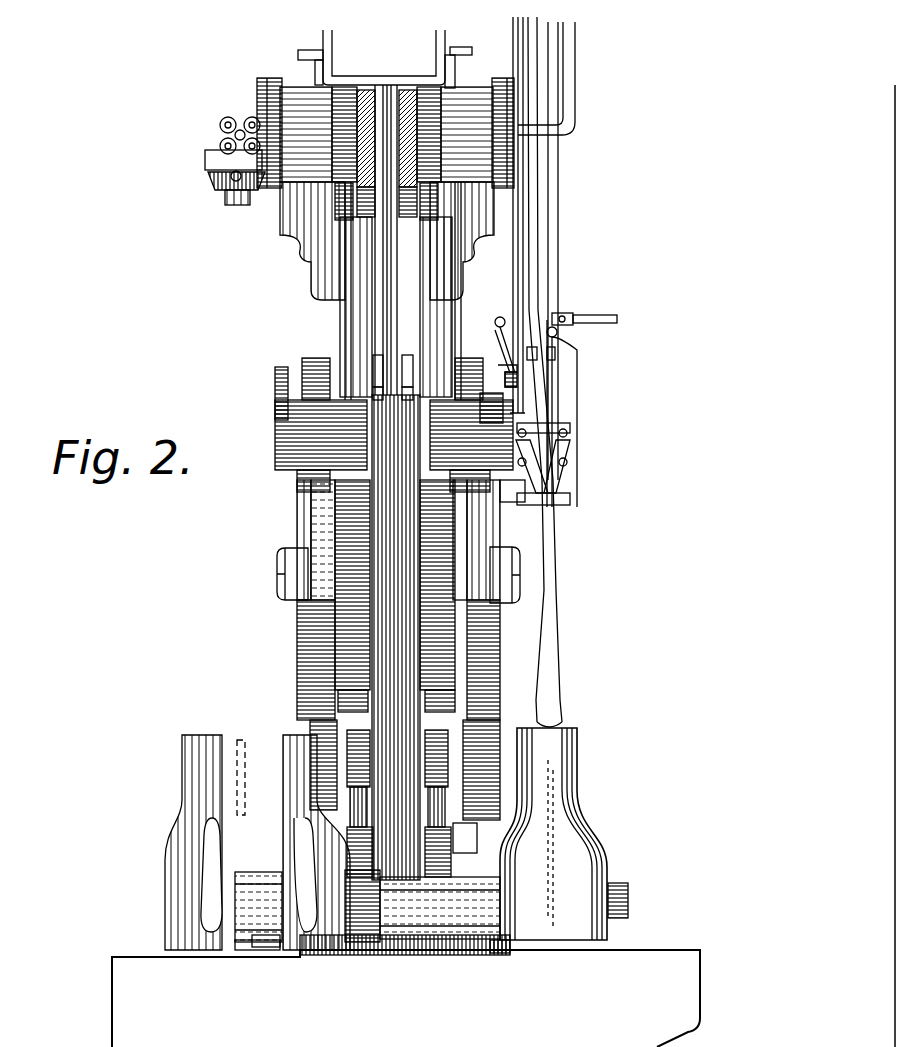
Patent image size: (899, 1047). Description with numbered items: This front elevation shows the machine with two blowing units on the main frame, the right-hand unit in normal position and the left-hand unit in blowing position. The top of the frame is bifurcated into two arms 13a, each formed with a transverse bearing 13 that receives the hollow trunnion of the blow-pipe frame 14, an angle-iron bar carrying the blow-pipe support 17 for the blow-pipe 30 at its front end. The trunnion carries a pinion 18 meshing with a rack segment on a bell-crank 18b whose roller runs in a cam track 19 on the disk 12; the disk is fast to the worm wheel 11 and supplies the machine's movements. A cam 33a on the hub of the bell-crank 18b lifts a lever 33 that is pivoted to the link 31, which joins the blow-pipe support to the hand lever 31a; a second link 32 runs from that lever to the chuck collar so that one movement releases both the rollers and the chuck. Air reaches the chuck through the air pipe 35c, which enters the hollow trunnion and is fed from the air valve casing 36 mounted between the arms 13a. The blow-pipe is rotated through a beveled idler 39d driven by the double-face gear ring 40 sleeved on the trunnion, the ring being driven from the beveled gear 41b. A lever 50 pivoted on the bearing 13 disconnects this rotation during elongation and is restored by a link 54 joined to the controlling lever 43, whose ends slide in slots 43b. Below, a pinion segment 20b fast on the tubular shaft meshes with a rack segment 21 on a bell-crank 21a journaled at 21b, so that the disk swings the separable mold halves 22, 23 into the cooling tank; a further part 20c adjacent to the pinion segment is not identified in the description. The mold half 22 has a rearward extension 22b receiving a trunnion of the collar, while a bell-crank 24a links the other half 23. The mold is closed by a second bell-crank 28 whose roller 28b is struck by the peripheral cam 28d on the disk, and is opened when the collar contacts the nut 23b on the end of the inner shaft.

The worm wheel 11 is at (455, 545).
The disk 12 is at (490, 570).
The transverse bearing 13 is at (465, 110).
The arms 13a is at (470, 260).
The blow-pipe frame 14 is at (557, 408).
The blow-pipe support 17 is at (570, 488).
The pinion 18 is at (432, 100).
The bell-crank 18b is at (500, 503).
The cam track 19 is at (487, 645).
The pinion segment 20b is at (450, 887).
The bearing 20c is at (265, 945).
The rack segment 21 is at (470, 862).
The bell-crank 21a is at (493, 783).
The journal 21b is at (493, 680).
The mold half 22 is at (578, 890).
The rearward extension 22b is at (248, 948).
The mold half 23 is at (177, 880).
The nut 23b is at (700, 903).
The bell-crank 24a is at (237, 880).
The bell-crank 28 is at (503, 857).
The roller 28b is at (517, 837).
The peripheral cam 28d is at (490, 800).
The blow-pipe 30 is at (555, 623).
The link 31 is at (508, 340).
The hand lever 31a is at (607, 320).
The link 32 is at (558, 252).
The lever 33 is at (513, 368).
The cam 33a is at (508, 385).
The air pipe 35c is at (573, 85).
The air valve casing 36 is at (370, 187).
The beveled idler 39d is at (223, 197).
The double-face gear ring 40 is at (510, 152).
The beveled gear 41b is at (373, 85).
The controlling lever 43 is at (413, 365).
The slots 43b is at (410, 392).
The lever 50 is at (448, 45).
The link 54 is at (440, 33).